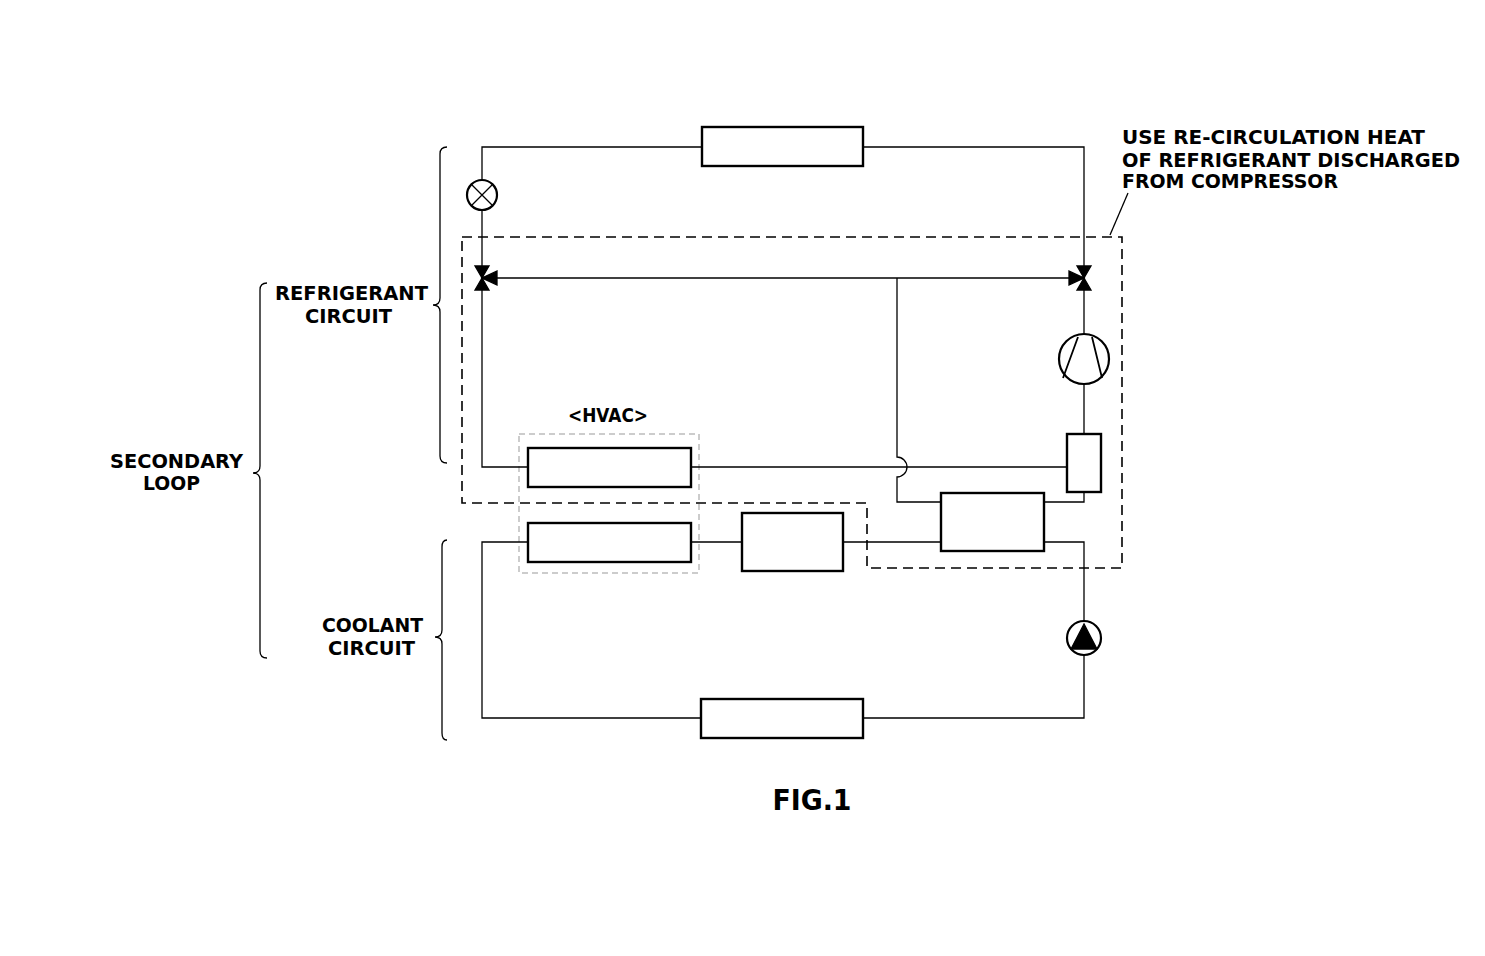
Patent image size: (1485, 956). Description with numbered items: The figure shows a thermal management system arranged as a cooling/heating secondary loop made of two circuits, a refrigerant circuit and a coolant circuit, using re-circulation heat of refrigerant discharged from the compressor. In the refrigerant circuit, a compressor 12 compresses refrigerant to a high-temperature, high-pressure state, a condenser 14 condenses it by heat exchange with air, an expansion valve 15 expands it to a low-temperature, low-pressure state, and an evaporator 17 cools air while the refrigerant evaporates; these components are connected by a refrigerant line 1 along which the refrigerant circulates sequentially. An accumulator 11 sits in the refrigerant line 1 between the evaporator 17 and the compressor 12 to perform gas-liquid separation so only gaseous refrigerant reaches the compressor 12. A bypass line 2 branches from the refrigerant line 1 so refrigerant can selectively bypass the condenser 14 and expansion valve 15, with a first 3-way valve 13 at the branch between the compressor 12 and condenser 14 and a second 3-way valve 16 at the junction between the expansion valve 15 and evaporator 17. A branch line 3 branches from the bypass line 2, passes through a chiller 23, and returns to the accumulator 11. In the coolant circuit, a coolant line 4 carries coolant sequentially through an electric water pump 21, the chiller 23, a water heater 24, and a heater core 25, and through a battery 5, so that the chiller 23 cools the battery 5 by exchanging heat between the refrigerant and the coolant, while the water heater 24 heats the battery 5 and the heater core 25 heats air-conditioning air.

The refrigerant line 1 is at (1030, 146).
The bypass line 2 is at (960, 282).
The branch line 3 is at (897, 355).
The coolant line 4 is at (932, 718).
The battery 5 is at (738, 698).
The accumulator 11 is at (1101, 462).
The compressor 12 is at (1109, 359).
The 3-way valve 13 is at (1092, 283).
The condenser 14 is at (782, 127).
The expansion valve 15 is at (476, 182).
The 3-way valve 16 is at (490, 285).
The evaporator 17 is at (677, 448).
The water pump 21 is at (1067, 632).
The chiller 23 is at (988, 552).
The water heater 24 is at (796, 572).
The heater core 25 is at (610, 563).